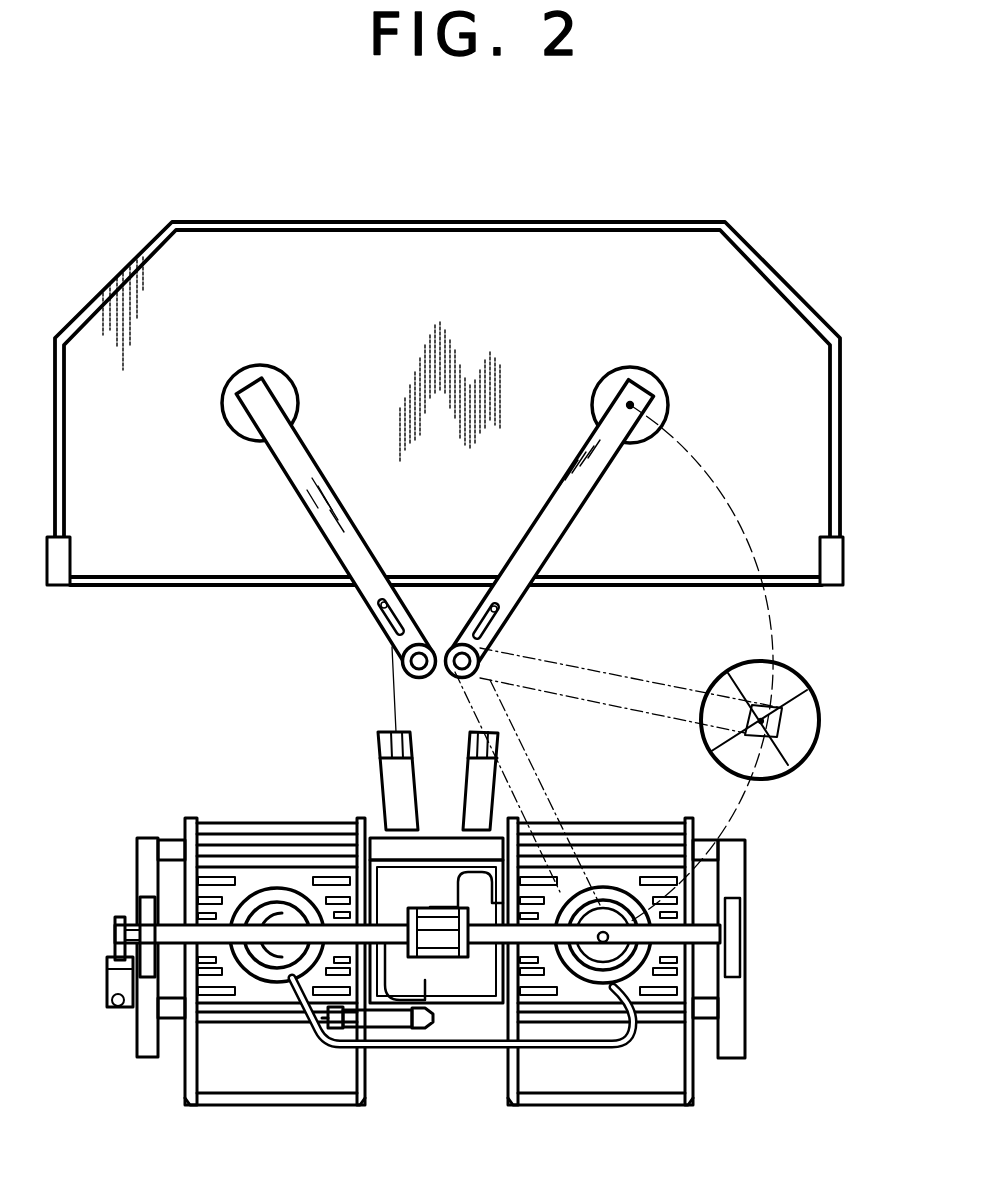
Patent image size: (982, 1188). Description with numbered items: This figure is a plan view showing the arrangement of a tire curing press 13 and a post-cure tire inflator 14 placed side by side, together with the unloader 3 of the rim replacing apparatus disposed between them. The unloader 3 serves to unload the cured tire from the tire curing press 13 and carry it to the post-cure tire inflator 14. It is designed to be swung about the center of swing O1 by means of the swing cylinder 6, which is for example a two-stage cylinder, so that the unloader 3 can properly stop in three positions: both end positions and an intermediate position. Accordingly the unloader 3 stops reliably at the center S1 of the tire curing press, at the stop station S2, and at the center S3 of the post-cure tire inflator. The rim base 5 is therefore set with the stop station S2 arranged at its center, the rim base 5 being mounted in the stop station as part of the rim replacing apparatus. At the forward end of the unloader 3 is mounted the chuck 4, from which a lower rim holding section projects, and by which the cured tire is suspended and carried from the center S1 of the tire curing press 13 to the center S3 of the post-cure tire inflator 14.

The unloader 3 is at (558, 448).
The chuck 4 is at (656, 379).
The rim base 5 is at (818, 732).
The swing cylinder 6 is at (467, 776).
The tire curing press 13 is at (687, 222).
The post-cure inflator 14 is at (453, 1060).
The center of swing O1 is at (455, 645).
The center of the tire curing press S1 is at (630, 405).
The stop station S2 is at (762, 720).
The center of the post-cure tire inflator S3 is at (608, 937).